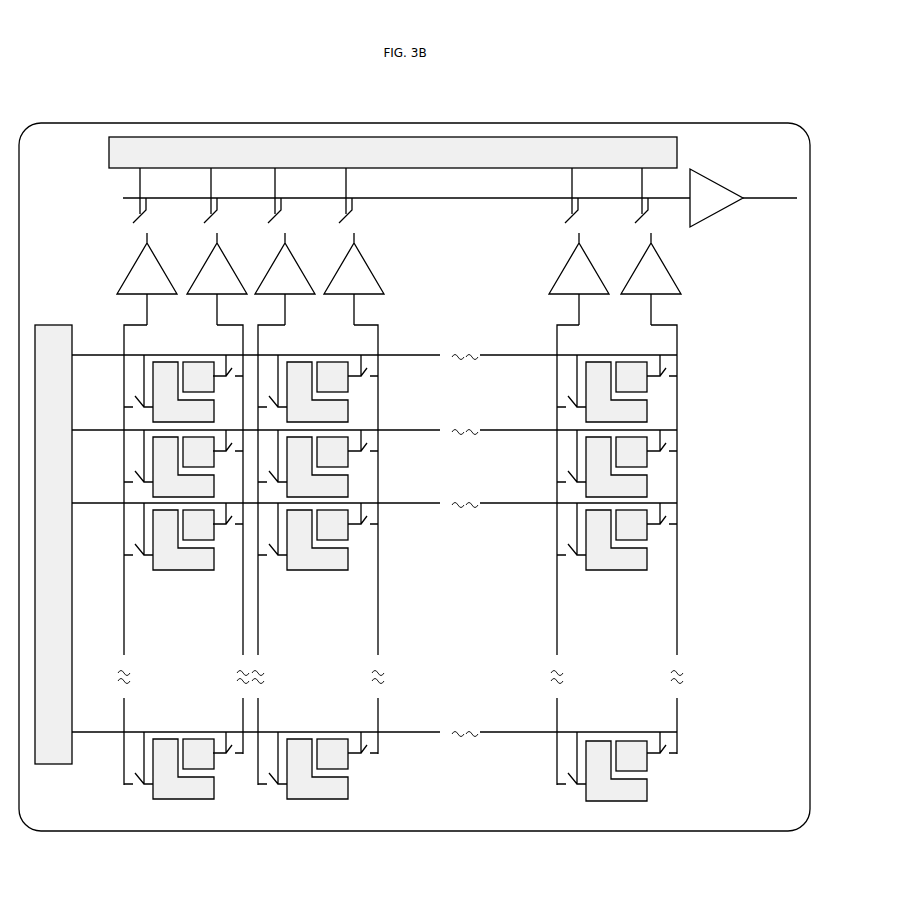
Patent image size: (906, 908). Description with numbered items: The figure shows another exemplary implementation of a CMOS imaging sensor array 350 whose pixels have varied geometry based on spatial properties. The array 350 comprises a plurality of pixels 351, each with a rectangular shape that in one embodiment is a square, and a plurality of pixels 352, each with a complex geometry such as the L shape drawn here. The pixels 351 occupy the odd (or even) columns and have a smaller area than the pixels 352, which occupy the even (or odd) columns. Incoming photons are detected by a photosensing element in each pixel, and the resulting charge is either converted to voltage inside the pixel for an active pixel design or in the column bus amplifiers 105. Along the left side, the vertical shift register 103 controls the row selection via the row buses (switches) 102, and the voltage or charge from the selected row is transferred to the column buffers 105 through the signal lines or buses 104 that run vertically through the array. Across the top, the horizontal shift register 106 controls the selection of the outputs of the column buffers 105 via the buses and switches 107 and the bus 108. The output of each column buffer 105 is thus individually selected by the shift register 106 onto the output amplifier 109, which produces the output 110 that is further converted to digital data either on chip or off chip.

The CMOS sensor array 350 is at (200, 123).
The buses (switches) 102 is at (374, 538).
The vertical shift register 103 is at (53, 544).
The signal line or bus 104 is at (400, 555).
The column buffers 105 is at (399, 279).
The horizontal shift register 106 is at (393, 152).
The buses (and switches) 107 is at (380, 195).
The bus 108 is at (406, 190).
The output amplifier 109 is at (716, 198).
The output 110 is at (770, 190).
The pixels 351 is at (430, 563).
The pixels 352 is at (385, 578).